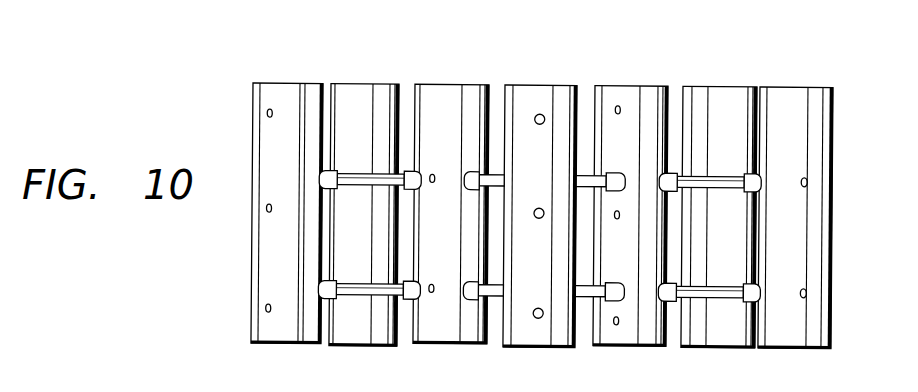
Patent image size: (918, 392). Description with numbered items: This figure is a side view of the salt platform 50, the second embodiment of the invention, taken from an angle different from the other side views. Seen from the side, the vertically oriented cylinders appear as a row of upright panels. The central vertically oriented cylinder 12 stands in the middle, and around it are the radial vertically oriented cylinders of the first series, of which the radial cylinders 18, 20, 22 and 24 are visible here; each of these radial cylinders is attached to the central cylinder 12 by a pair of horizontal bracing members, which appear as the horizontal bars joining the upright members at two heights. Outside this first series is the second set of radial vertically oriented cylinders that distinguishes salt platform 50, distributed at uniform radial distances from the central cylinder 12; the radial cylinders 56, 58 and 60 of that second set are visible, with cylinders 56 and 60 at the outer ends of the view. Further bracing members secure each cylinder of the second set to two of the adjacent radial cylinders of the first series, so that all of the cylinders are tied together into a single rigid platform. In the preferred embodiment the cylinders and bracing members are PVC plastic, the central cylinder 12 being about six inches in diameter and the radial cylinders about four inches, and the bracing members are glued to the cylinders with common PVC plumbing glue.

The salt platform 50 is at (842, 60).
The radial vertically oriented cylinder 60 is at (258, 127).
The radial vertically oriented cylinder 24 is at (353, 90).
The radial vertically oriented cylinder 22 is at (438, 90).
The radial vertically oriented cylinder 58 is at (520, 90).
The central vertically oriented cylinder 12 is at (580, 103).
The radial vertically oriented cylinder 20 is at (637, 90).
The radial vertically oriented cylinder 18 is at (737, 93).
The radial vertically oriented cylinder 56 is at (790, 93).